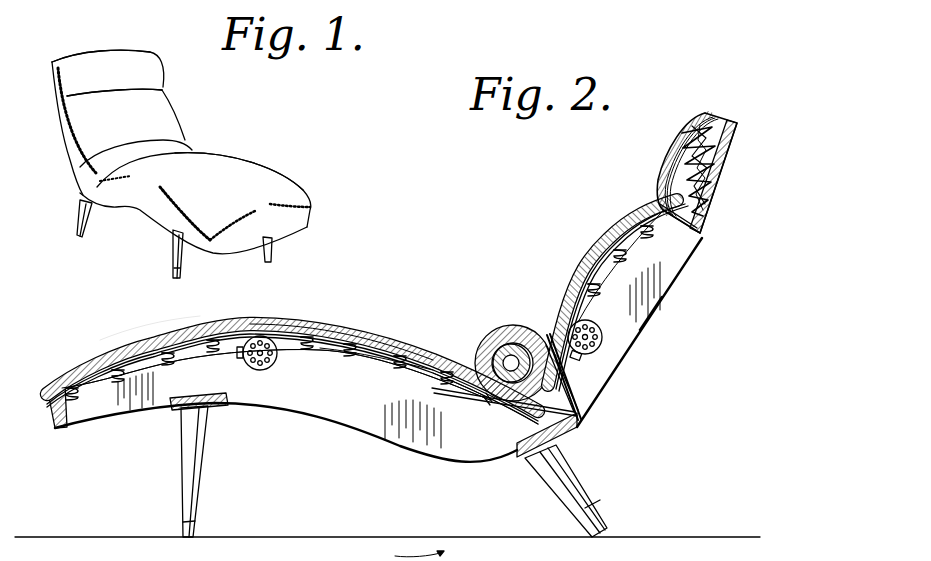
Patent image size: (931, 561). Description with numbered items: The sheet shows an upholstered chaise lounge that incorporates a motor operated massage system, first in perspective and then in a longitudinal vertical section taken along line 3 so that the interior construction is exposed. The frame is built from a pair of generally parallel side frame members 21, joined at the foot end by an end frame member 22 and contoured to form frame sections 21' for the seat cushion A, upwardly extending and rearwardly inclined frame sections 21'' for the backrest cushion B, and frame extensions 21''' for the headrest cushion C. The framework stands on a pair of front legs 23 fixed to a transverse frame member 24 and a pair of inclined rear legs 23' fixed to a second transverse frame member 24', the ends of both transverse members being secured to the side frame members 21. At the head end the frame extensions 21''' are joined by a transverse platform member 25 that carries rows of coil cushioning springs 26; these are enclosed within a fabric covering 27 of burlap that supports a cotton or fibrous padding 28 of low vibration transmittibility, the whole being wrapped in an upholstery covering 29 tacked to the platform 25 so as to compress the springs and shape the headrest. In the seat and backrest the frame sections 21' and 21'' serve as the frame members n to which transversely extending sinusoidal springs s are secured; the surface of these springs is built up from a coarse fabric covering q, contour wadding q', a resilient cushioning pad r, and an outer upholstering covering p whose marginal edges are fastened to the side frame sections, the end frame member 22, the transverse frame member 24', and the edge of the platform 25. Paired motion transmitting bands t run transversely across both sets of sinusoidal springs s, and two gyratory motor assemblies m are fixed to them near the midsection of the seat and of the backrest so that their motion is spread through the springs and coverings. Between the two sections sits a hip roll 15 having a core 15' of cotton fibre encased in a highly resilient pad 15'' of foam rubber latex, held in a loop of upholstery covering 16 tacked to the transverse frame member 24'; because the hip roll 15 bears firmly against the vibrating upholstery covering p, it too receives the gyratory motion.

In FIG. 2, the section line 3- 3 is at (108, 432).
In FIG. 2, the hip roll 15 is at (506, 353).
In FIG. 2, the core 15' is at (487, 356).
In FIG. 2, the resilient pad 15'' is at (540, 356).
In FIG. 2, the upholstery covering 16 is at (532, 323).
In FIG. 2, the side frame members 21 is at (286, 442).
In FIG. 2, the frame sections 21' is at (276, 400).
In FIG. 2, the frame sections 21'' is at (678, 313).
In FIG. 2, the frame extensions 21''' is at (712, 221).
In FIG. 2, the end frame member 22 is at (70, 432).
In FIG. 1, the front legs 23 is at (221, 254).
In FIG. 2, the front legs 23 is at (194, 471).
In FIG. 1, the rear legs 23' is at (61, 218).
In FIG. 2, the rear legs 23' is at (576, 491).
In FIG. 2, the transverse frame member 24 is at (185, 422).
In FIG. 2, the second transverse frame member 24' is at (544, 458).
In FIG. 2, the transverse platform member 25 is at (730, 168).
In FIG. 2, the coil cushioning springs 26 is at (717, 192).
In FIG. 2, the fabric covering 27 is at (680, 141).
In FIG. 2, the padding 28 is at (676, 154).
In FIG. 2, the upholstery covering 29 is at (670, 170).
In FIG. 1, the seat cushion A is at (268, 160).
In FIG. 2, the seat cushion A is at (145, 328).
In FIG. 1, the backrest cushion B is at (183, 103).
In FIG. 2, the backrest cushion B is at (595, 218).
In FIG. 1, the headrest cushion C is at (130, 42).
In FIG. 2, the headrest cushion C is at (680, 120).
In FIG. 2, the coarse fabric covering q is at (362, 298).
In FIG. 2, the contour wadding q' is at (341, 323).
In FIG. 2, the resilient cushioning pad r is at (396, 333).
In FIG. 2, the upholstering covering p is at (428, 347).
In FIG. 2, the sinusoidal springs s is at (196, 352).
In FIG. 2, the motion transmitting bands t is at (326, 355).
In FIG. 2, the gyratory motor assemblies m is at (262, 371).
In FIG. 2, the frame members n is at (358, 440).